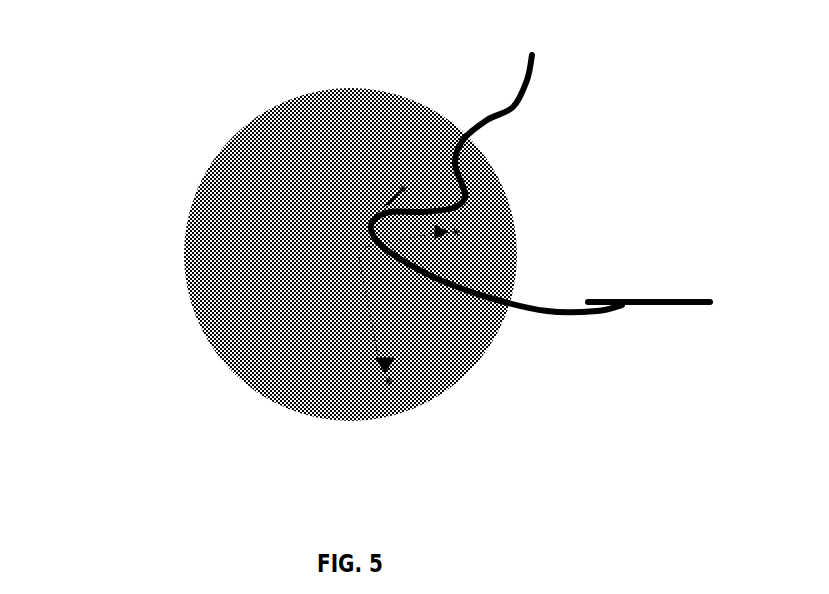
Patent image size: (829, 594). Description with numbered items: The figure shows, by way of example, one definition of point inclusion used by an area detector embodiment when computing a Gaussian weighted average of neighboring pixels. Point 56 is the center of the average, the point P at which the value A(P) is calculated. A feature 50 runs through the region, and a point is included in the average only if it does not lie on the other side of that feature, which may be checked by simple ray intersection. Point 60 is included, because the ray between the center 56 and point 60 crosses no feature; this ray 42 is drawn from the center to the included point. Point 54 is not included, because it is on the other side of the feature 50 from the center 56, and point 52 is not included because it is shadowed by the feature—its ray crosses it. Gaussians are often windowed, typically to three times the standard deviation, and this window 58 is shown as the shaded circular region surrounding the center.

The displacement vector 42 is at (377, 338).
The feature 50 is at (488, 158).
The point 52 is at (395, 193).
The point 54 is at (462, 232).
The center of the average 56 is at (343, 247).
The window 58 is at (173, 277).
The point 60 is at (380, 373).